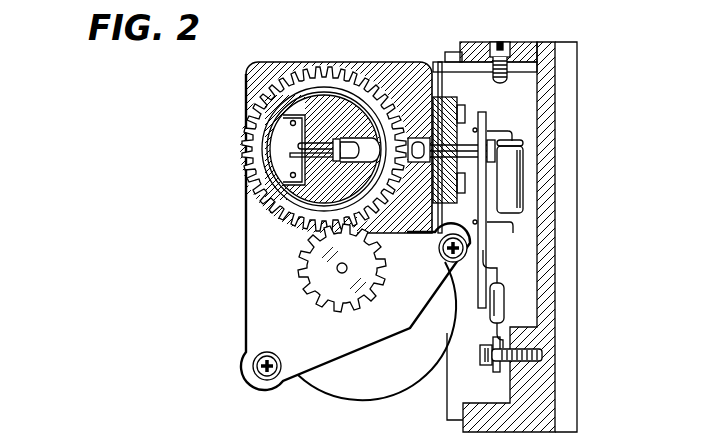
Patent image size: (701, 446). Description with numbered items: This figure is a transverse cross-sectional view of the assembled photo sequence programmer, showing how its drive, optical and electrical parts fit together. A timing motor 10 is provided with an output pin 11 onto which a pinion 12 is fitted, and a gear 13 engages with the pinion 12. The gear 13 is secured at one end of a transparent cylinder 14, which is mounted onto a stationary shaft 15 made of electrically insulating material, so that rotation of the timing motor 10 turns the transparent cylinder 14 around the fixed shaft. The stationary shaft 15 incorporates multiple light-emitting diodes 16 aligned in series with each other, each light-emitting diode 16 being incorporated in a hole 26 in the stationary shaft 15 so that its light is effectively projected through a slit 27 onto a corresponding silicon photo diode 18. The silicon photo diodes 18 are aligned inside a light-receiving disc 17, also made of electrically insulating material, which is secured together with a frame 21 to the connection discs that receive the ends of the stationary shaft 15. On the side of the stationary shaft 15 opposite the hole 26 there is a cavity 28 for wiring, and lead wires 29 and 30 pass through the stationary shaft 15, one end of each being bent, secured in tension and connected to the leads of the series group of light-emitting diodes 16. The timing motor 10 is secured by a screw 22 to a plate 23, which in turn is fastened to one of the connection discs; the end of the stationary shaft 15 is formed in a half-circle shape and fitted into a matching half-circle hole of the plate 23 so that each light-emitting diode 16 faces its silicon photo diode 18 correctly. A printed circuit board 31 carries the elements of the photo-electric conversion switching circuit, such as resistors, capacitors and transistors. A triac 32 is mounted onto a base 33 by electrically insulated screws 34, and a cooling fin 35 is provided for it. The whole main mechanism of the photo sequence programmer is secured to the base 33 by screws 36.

The timing motor 10 is at (397, 382).
The output pin 11 is at (347, 268).
The pinion 12 is at (300, 287).
The gear 13 is at (275, 218).
The transparent cylinder 14 is at (279, 194).
The stationary shaft 15 is at (316, 112).
The light-emitting diodes 16 is at (343, 136).
The light-receiving disc 17 is at (407, 233).
The silicon photo diodes 18 is at (409, 134).
The frame 21 is at (470, 42).
The screw 22 is at (258, 385).
The plate 23 is at (246, 268).
The hole 26 is at (348, 137).
The slit 27 is at (352, 92).
The cavity 28 is at (277, 150).
The lead wire 29 is at (290, 123).
The lead wire 30 is at (290, 176).
The printed circuit board 31 is at (493, 118).
The triac 32 is at (504, 307).
The base 33 is at (548, 40).
The screws 34 is at (475, 367).
The cooling fin 35 is at (567, 164).
The screws 36 is at (502, 39).